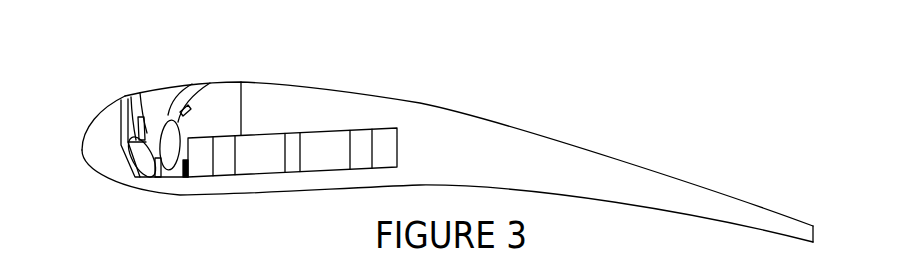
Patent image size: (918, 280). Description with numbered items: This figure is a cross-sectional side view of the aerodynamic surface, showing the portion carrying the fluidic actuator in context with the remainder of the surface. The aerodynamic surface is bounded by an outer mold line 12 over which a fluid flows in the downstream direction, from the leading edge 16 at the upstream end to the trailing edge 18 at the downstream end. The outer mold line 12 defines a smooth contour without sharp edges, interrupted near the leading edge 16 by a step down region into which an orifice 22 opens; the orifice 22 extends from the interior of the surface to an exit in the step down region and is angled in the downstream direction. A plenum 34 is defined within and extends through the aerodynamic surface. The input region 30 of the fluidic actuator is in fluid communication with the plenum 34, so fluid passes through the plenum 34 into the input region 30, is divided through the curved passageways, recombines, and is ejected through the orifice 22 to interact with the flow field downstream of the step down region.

The outer mold line 12 is at (402, 96).
The leading edge 16 is at (82, 143).
The trailing edge 18 is at (810, 230).
The orifice 22 is at (138, 92).
The input region 30 is at (138, 157).
The plenum 34 is at (214, 157).